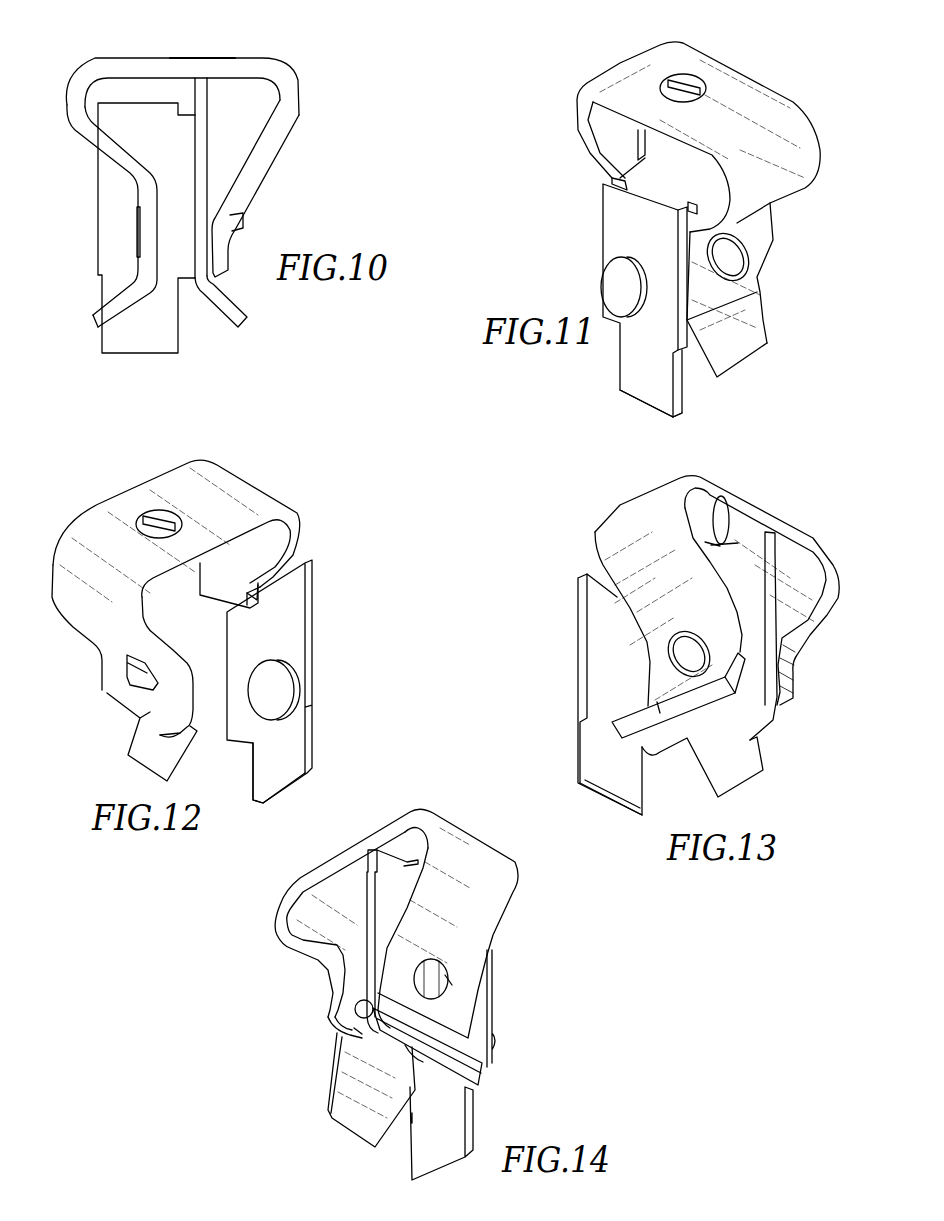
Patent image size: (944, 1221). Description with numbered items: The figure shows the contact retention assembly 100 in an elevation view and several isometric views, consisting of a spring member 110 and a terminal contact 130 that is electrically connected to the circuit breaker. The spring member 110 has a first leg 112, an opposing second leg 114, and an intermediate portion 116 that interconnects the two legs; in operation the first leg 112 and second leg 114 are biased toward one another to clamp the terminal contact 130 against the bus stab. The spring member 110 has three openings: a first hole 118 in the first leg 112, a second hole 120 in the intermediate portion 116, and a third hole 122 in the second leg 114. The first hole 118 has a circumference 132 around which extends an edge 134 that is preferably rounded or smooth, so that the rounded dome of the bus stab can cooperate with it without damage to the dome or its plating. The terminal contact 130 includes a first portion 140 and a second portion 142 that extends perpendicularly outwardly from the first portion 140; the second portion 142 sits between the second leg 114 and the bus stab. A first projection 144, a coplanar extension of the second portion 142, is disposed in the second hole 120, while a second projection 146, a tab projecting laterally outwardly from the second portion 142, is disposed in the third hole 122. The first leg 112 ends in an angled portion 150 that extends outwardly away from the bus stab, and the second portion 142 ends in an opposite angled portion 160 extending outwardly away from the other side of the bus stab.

In FIG. 10, the contact retention assembly 100 is at (77, 366).
In FIG. 11, the contact retention assembly 100 is at (805, 305).
In FIG. 12, the contact retention assembly 100 is at (73, 713).
In FIG. 13, the contact retention assembly 100 is at (846, 748).
In FIG. 14, the contact retention assembly 100 is at (300, 1097).
In FIG. 10, the spring member 110 is at (303, 72).
In FIG. 11, the spring member 110 is at (801, 98).
In FIG. 12, the spring member 110 is at (247, 470).
In FIG. 13, the spring member 110 is at (806, 522).
In FIG. 14, the spring member 110 is at (465, 826).
In FIG. 10, the first leg 112 is at (142, 185).
In FIG. 11, the first leg 112 is at (765, 228).
In FIG. 12, the first leg 112 is at (228, 593).
In FIG. 13, the first leg 112 is at (650, 660).
In FIG. 14, the first leg 112 is at (348, 982).
In FIG. 10, the second leg 114 is at (248, 172).
In FIG. 11, the second leg 114 is at (588, 160).
In FIG. 12, the second leg 114 is at (101, 642).
In FIG. 13, the second leg 114 is at (790, 657).
In FIG. 14, the second leg 114 is at (497, 918).
In FIG. 10, the intermediate portion 116 is at (232, 67).
In FIG. 11, the intermediate portion 116 is at (735, 82).
In FIG. 12, the intermediate portion 116 is at (167, 484).
In FIG. 13, the intermediate portion 116 is at (752, 500).
In FIG. 14, the intermediate portion 116 is at (333, 863).
In FIG. 11, the first hole 118 is at (740, 258).
In FIG. 13, the first hole 118 is at (690, 632).
In FIG. 14, the first hole 118 is at (358, 1020).
In FIG. 11, the second hole 120 is at (672, 84).
In FIG. 12, the second hole 120 is at (173, 520).
In FIG. 13, the second hole 120 is at (730, 540).
In FIG. 14, the second hole 120 is at (405, 862).
In FIG. 12, the third hole 122 is at (160, 683).
In FIG. 14, the third hole 122 is at (440, 952).
In FIG. 10, the terminal contact 130 is at (107, 180).
In FIG. 11, the terminal contact 130 is at (620, 212).
In FIG. 12, the terminal contact 130 is at (308, 618).
In FIG. 13, the terminal contact 130 is at (598, 612).
In FIG. 14, the terminal contact 130 is at (488, 1018).
In FIG. 14, the circumference 132 is at (354, 1028).
In FIG. 14, the edge 134 is at (412, 1055).
In FIG. 10, the first portion 140 is at (105, 212).
In FIG. 11, the first portion 140 is at (638, 362).
In FIG. 12, the first portion 140 is at (308, 583).
In FIG. 13, the first portion 140 is at (611, 685).
In FIG. 14, the first portion 140 is at (455, 1120).
In FIG. 10, the second portion 142 is at (203, 138).
In FIG. 11, the second portion 142 is at (670, 168).
In FIG. 12, the second portion 142 is at (212, 635).
In FIG. 13, the second portion 142 is at (760, 587).
In FIG. 14, the second portion 142 is at (392, 887).
In FIG. 10, the first projection 144 is at (203, 57).
In FIG. 11, the first projection 144 is at (690, 85).
In FIG. 12, the first projection 144 is at (152, 517).
In FIG. 13, the first projection 144 is at (715, 490).
In FIG. 14, the first projection 144 is at (408, 858).
In FIG. 10, the second projection 146 is at (240, 222).
In FIG. 12, the second projection 146 is at (132, 673).
In FIG. 14, the second projection 146 is at (447, 983).
In FIG. 10, the angled portion 150 is at (90, 322).
In FIG. 11, the angled portion 150 is at (728, 360).
In FIG. 13, the angled portion 150 is at (637, 740).
In FIG. 14, the angled portion 150 is at (355, 1115).
In FIG. 10, the angled portion 160 is at (225, 310).
In FIG. 12, the angled portion 160 is at (145, 748).
In FIG. 13, the angled portion 160 is at (742, 770).
In FIG. 14, the angled portion 160 is at (490, 1066).